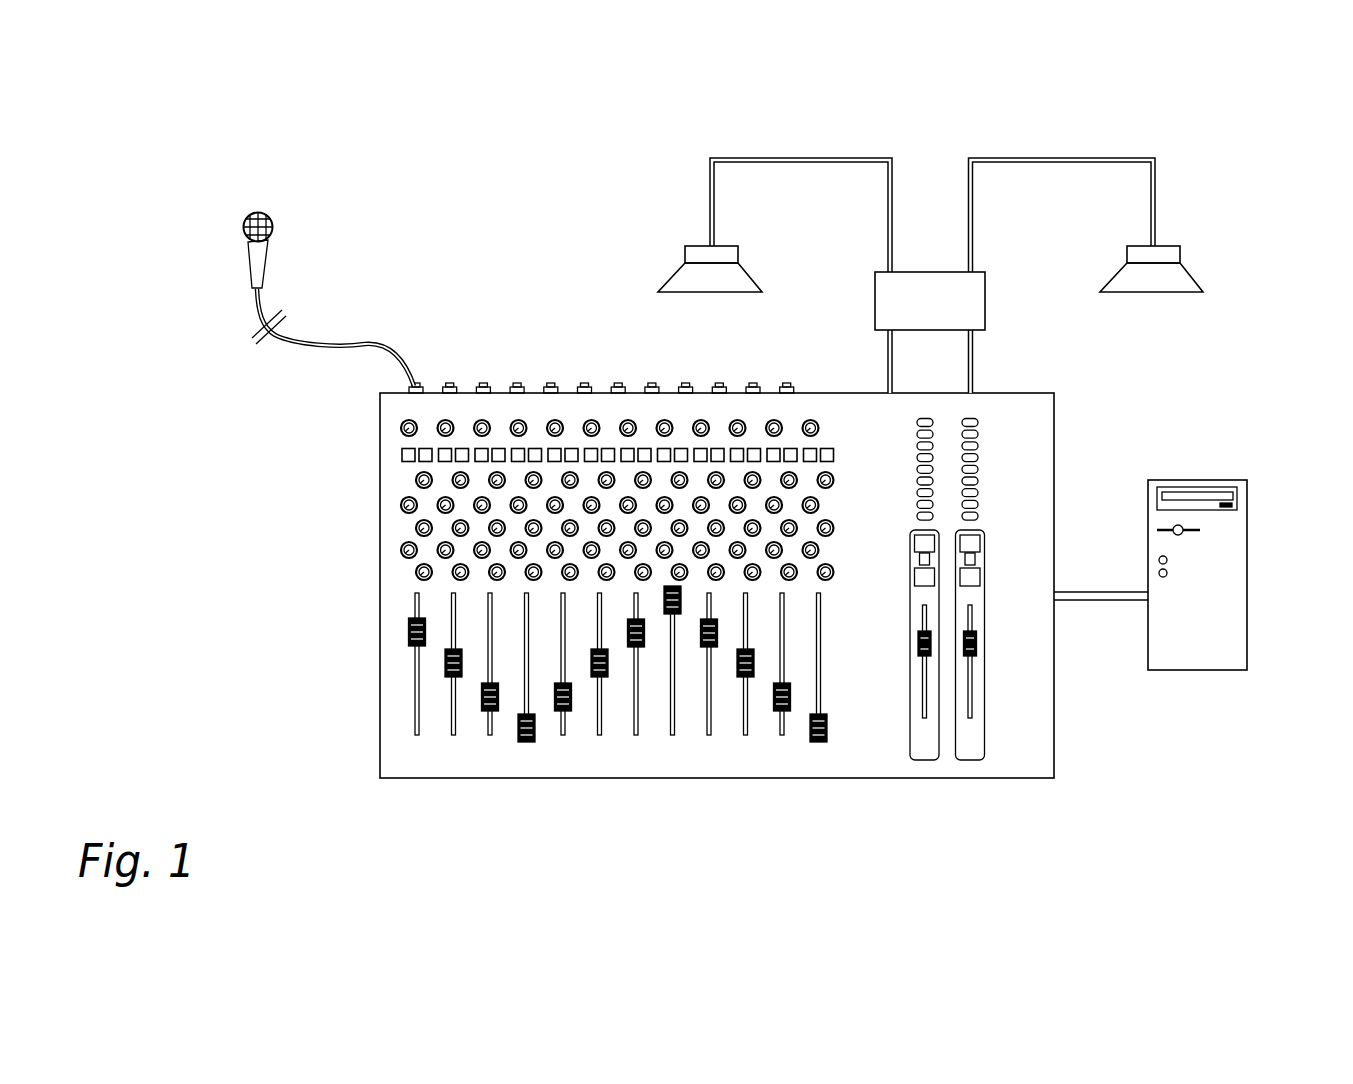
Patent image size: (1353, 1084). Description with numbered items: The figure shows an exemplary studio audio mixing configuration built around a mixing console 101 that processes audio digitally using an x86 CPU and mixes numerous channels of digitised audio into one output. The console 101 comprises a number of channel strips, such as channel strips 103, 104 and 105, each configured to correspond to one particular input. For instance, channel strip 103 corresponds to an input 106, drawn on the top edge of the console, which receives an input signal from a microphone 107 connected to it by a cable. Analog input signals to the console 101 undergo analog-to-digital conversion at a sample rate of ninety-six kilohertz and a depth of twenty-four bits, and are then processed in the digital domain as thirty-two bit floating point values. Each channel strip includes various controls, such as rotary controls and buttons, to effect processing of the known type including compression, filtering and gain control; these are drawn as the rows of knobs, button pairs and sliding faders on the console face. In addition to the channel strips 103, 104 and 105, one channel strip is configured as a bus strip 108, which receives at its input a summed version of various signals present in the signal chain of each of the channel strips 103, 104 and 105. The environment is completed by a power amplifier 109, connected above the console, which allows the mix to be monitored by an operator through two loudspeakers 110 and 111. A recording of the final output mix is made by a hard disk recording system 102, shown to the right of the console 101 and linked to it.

The mixing console 101 is at (751, 589).
The hard disk recording system 102 is at (1242, 633).
The channel strip 103 is at (417, 758).
The channel strip 104 is at (454, 758).
The channel strip 105 is at (490, 758).
The input 106 is at (420, 379).
The microphone 107 is at (265, 200).
The bus strip 108 is at (818, 758).
The power amplifier 109 is at (980, 303).
The loudspeaker 110 is at (689, 246).
The loudspeaker 111 is at (1128, 246).